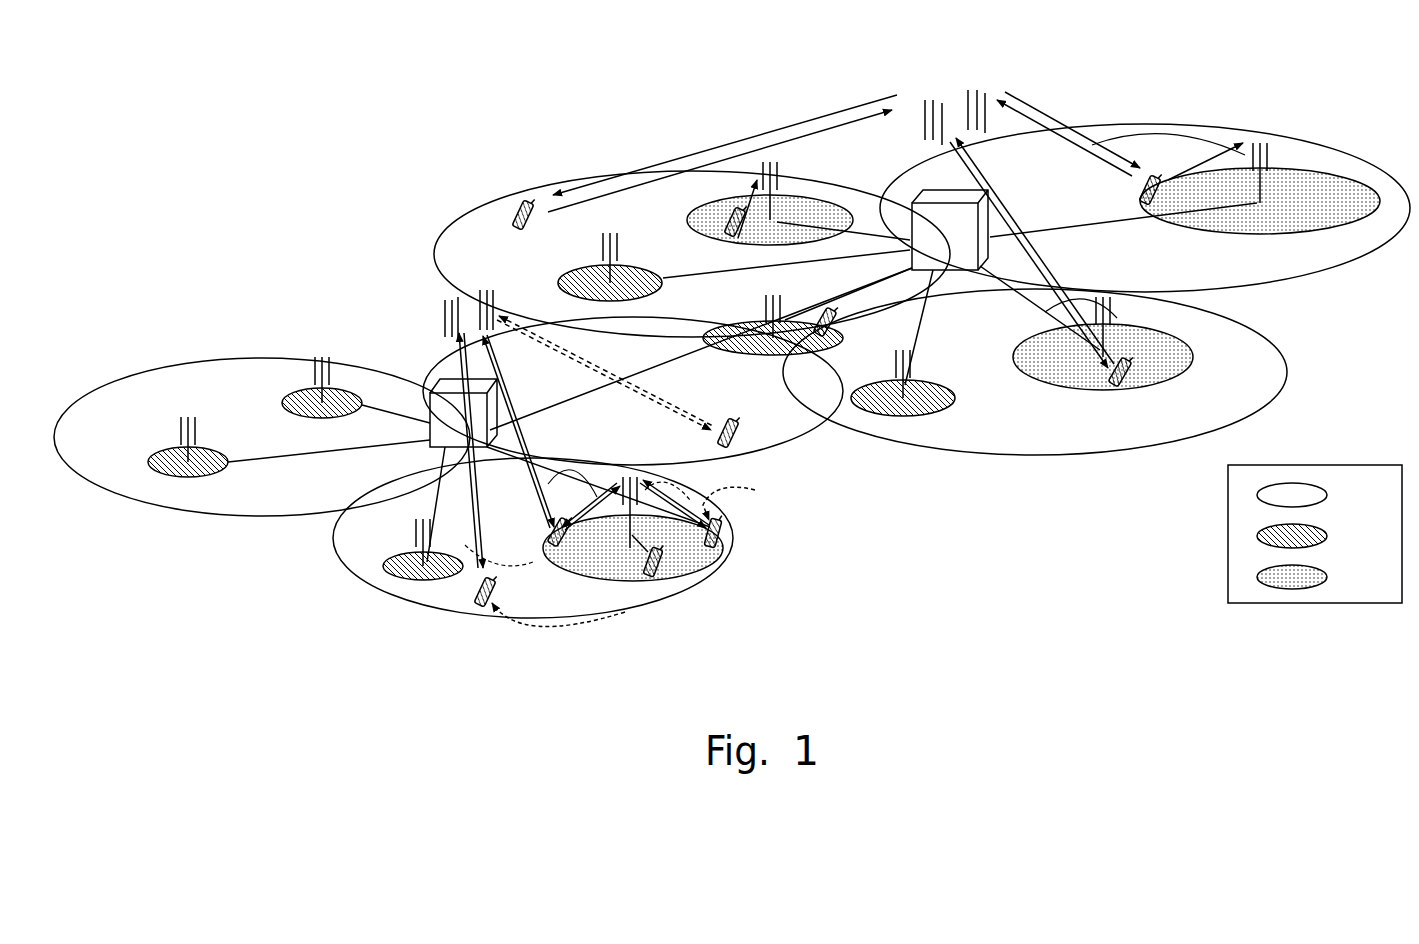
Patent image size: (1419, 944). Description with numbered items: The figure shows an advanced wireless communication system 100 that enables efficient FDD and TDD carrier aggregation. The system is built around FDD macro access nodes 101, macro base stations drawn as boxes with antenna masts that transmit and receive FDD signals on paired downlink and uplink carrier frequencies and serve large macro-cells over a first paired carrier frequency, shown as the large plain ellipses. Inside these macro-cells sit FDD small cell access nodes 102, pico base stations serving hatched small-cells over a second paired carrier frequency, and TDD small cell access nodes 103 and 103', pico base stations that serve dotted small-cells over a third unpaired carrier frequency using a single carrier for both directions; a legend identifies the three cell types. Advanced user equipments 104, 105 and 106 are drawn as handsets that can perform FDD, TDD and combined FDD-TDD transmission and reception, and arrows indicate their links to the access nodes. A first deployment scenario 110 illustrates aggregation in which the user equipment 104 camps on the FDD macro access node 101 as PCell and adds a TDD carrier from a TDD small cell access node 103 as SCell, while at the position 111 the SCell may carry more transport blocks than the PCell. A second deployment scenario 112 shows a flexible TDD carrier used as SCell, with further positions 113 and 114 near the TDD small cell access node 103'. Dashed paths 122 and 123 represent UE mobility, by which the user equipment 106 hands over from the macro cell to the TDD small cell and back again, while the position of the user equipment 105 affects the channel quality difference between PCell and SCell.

The advanced wireless communication system 100 is at (281, 133).
The FDD macro access node 101 is at (437, 298).
The FDD small cell access node 102 is at (323, 352).
The TDD small cell access node 103 is at (1036, 222).
The TDD small cell access node 103' is at (625, 480).
The user equipment 104 is at (1140, 197).
The user equipment 105 is at (548, 540).
The user equipment 106 is at (723, 243).
The first deployment scenario 110 is at (1143, 133).
The UE position in scenario 111 is at (1047, 313).
The second deployment scenario 112 is at (578, 480).
The cell coverage area 113 is at (660, 492).
The cell coverage area 114 is at (535, 562).
The UE mobility 122 is at (747, 496).
The mobility 123 is at (620, 612).